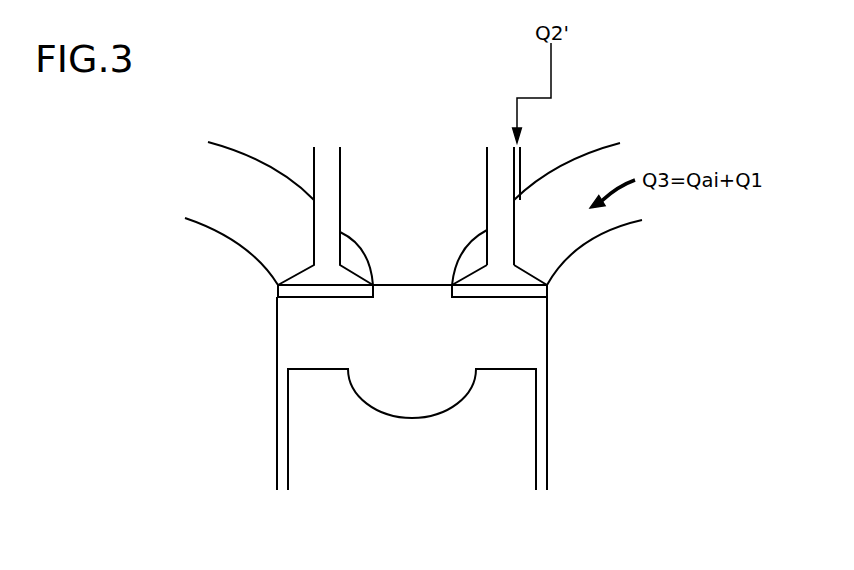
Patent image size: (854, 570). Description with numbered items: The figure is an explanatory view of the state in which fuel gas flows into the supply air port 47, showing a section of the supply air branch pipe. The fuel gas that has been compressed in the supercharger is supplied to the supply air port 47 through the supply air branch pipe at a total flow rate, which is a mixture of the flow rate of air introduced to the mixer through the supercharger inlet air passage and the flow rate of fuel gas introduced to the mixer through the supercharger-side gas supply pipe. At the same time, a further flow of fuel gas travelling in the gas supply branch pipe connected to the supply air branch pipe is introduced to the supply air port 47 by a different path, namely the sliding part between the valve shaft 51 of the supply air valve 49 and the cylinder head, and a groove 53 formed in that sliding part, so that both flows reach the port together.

The supply air port 47 is at (612, 237).
The supply air valve 49 is at (507, 290).
The valve shaft 51 is at (487, 183).
The groove 53 is at (520, 183).